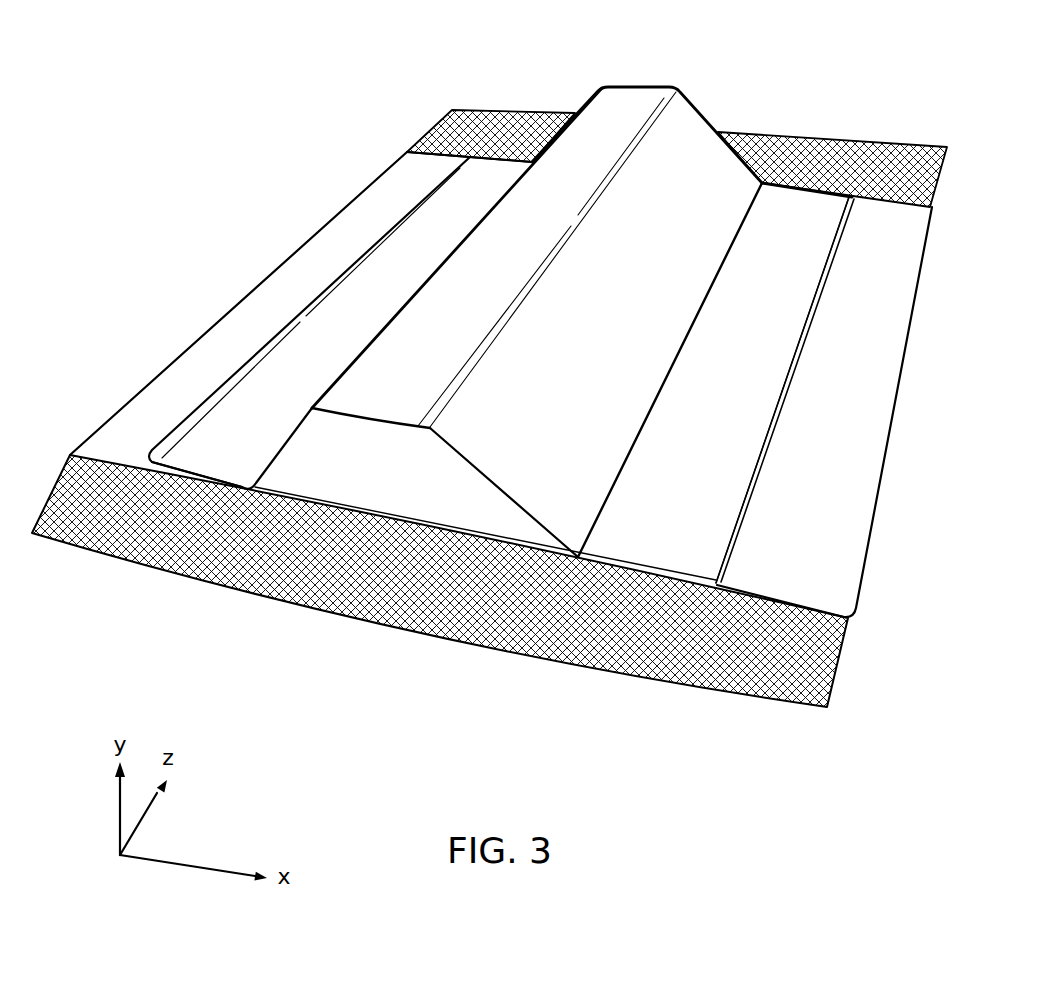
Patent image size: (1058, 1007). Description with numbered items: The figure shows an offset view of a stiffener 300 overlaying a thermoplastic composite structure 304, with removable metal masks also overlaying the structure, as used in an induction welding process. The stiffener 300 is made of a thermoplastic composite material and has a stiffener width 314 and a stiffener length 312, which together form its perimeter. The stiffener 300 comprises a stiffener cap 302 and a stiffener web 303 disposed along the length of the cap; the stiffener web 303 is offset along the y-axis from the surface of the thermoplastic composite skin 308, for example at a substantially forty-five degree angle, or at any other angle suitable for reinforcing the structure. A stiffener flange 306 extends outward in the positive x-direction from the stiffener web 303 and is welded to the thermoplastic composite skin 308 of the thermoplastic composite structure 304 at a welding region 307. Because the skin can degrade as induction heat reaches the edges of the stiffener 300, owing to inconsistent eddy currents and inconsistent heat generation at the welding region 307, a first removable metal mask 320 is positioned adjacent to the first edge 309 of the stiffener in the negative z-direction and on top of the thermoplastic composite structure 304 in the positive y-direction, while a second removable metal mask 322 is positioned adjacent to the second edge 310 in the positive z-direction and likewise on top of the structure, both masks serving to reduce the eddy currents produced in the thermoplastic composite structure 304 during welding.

The stiffener 300 is at (489, 386).
The stiffener cap 302 is at (627, 96).
The stiffener web 303 is at (715, 132).
The thermoplastic composite structure 304 is at (240, 318).
The stiffener flange 306 is at (325, 320).
The welding region 307 is at (650, 572).
The thermoplastic composite skin 308 is at (484, 538).
The first edge 309 is at (240, 490).
The second edge 310 is at (500, 160).
The stiffener length 312 is at (810, 305).
The stiffener width 314 is at (630, 746).
The first removable metal mask 320 is at (820, 662).
The second removable metal mask 322 is at (886, 160).